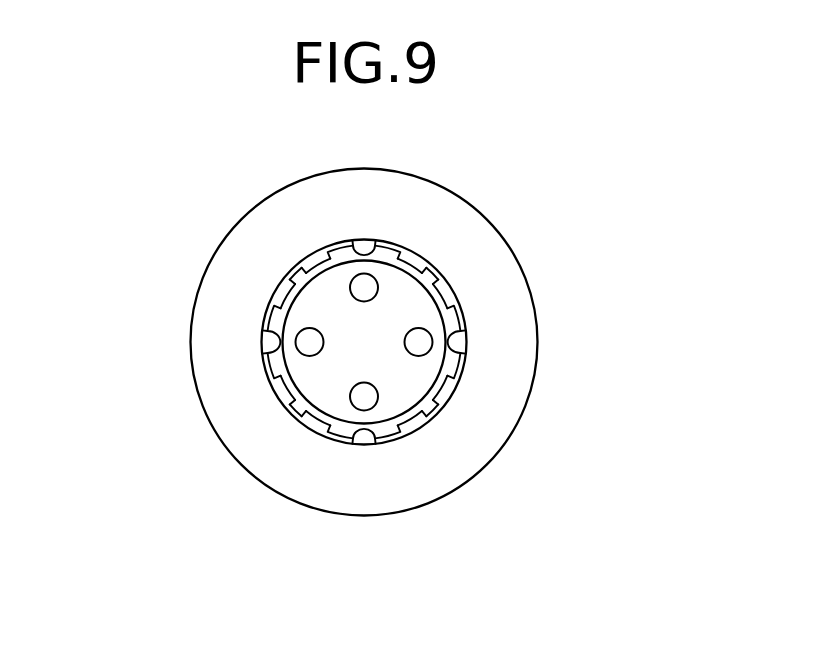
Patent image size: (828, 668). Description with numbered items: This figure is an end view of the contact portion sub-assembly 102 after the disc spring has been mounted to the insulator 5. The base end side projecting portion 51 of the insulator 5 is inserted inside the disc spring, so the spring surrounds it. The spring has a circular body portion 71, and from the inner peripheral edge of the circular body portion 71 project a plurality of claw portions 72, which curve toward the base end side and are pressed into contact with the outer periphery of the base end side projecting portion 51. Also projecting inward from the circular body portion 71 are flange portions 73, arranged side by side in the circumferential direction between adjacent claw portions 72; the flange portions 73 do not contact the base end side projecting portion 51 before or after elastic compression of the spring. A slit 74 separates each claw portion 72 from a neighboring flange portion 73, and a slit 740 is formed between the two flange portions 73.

The contact portion sub-assembly 102 is at (168, 503).
The circular body portion 71 is at (427, 215).
The claw portion 72 is at (364, 248).
The flange portion 73 is at (418, 260).
The slit 74 is at (455, 323).
The slit 740 is at (432, 408).
The insulator 5 is at (333, 287).
The base end side projecting portion 51 is at (310, 312).